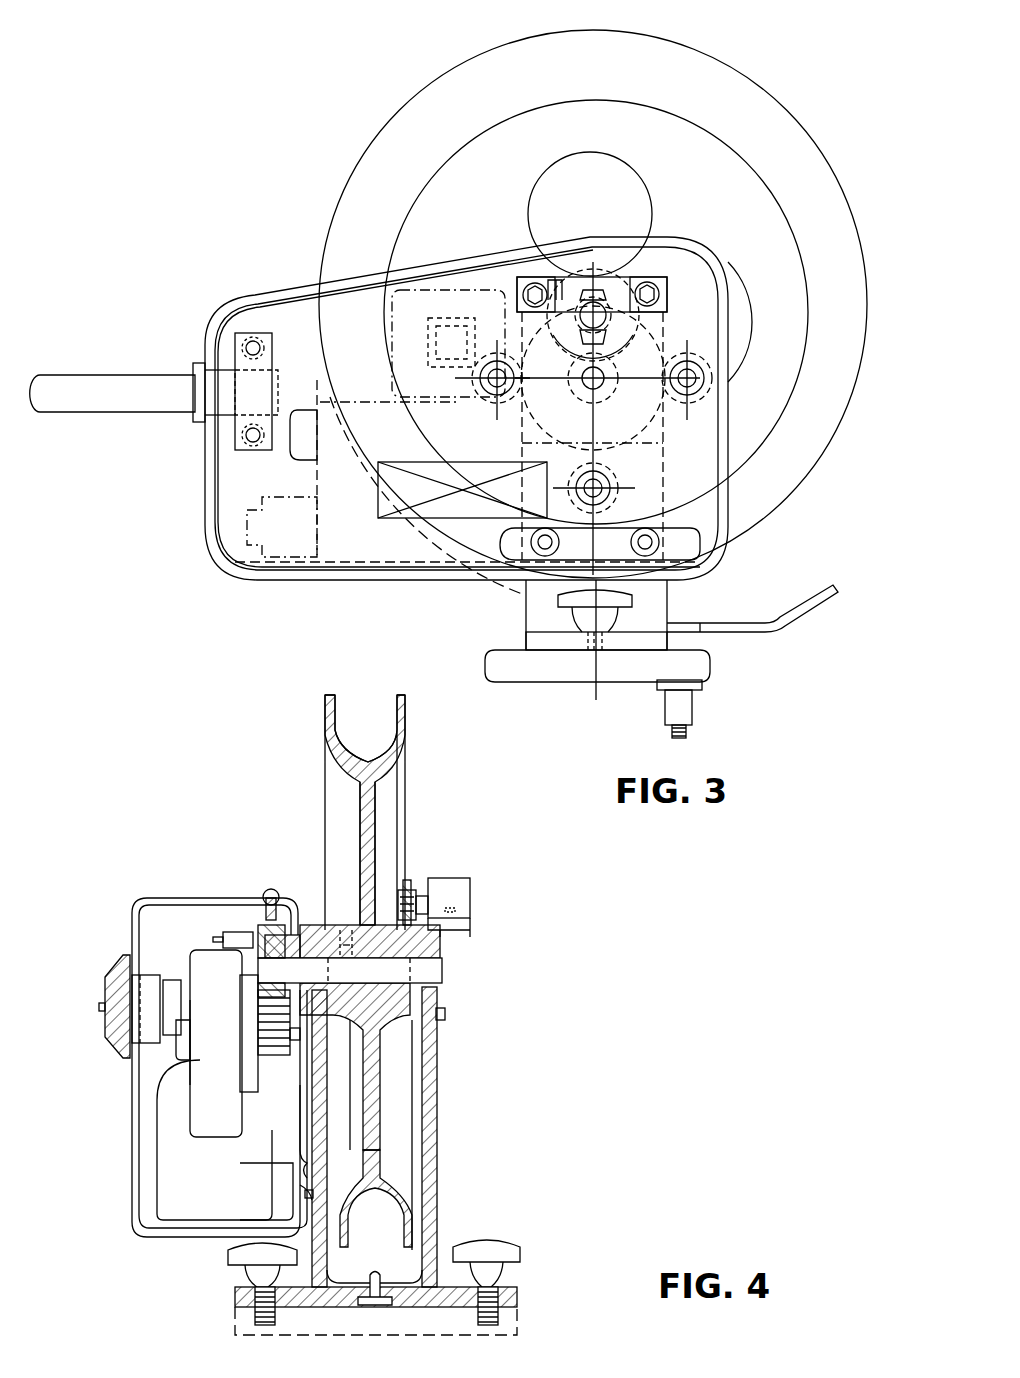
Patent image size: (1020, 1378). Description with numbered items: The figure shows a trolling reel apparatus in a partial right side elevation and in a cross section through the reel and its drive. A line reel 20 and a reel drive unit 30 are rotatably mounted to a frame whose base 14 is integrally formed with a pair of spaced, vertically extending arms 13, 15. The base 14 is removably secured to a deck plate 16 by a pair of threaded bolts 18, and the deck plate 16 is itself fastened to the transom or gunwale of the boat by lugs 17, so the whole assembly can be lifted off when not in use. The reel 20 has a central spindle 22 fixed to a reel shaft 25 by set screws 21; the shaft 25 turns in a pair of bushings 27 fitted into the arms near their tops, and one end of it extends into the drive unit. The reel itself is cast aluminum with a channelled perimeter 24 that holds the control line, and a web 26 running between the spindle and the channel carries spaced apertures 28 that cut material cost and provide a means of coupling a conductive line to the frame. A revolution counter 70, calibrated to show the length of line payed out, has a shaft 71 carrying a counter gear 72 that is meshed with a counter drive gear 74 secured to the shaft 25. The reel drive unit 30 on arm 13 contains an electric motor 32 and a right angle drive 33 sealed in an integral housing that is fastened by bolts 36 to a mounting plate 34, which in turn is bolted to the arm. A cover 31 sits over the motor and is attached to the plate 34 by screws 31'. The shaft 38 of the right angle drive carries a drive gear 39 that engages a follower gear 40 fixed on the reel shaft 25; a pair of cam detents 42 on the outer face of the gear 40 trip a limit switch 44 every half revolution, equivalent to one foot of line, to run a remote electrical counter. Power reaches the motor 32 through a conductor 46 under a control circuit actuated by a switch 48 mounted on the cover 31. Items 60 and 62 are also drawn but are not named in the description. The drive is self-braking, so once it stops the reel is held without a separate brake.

In FIG. 3, the arm 13 is at (672, 600).
In FIG. 4, the arm 13 is at (312, 1238).
In FIG. 3, the base 14 is at (526, 640).
In FIG. 4, the base 14 is at (517, 1300).
In FIG. 4, the arm 15 is at (438, 1135).
In FIG. 3, the deck plate 16 is at (485, 668).
In FIG. 4, the deck plate 16 is at (520, 1322).
In FIG. 3, the lug 17 is at (695, 712).
In FIG. 3, the threaded bolt 18 is at (636, 606).
In FIG. 4, the threaded bolt 18 is at (246, 1270).
In FIG. 3, the line reel 20 is at (790, 110).
In FIG. 4, the set screw 21 is at (347, 930).
In FIG. 4, the central spindle 22 is at (380, 920).
In FIG. 4, the channelled perimeter 24 is at (338, 727).
In FIG. 4, the reel shaft 25 is at (445, 963).
In FIG. 3, the web 26 is at (484, 207).
In FIG. 4, the web 26 is at (372, 845).
In FIG. 4, the bushing 27 is at (305, 935).
In FIG. 3, the aperture 28 is at (618, 192).
In FIG. 4, the aperture 28 is at (378, 1100).
In FIG. 3, the reel drive unit 30 is at (285, 294).
In FIG. 4, the reel drive unit 30 is at (170, 893).
In FIG. 4, the cover 31 is at (173, 858).
In FIG. 4, the screw 31' is at (276, 889).
In FIG. 3, the electric motor 32 is at (414, 447).
In FIG. 4, the electric motor 32 is at (170, 1120).
In FIG. 3, the right angle drive 33 is at (572, 427).
In FIG. 4, the right angle drive 33 is at (200, 1040).
In FIG. 4, the mounting plate 34 is at (290, 910).
In FIG. 4, the bolt 36 is at (305, 1165).
In FIG. 4, the shaft 38 is at (292, 1042).
In FIG. 3, the drive gear 39 is at (604, 396).
In FIG. 4, the drive gear 39 is at (278, 1057).
In FIG. 3, the follower gear 40 is at (547, 344).
In FIG. 4, the follower gear 40 is at (262, 950).
In FIG. 3, the cam detent 42 is at (636, 313).
In FIG. 3, the limit switch 44 is at (550, 280).
In FIG. 4, the limit switch 44 is at (245, 930).
In FIG. 3, the conductor 46 is at (128, 372).
In FIG. 3, the switch 48 is at (470, 368).
In FIG. 4, the switch 48 is at (112, 977).
In FIG. 3, the lever 60 is at (797, 624).
In FIG. 3, the lever arm 62 is at (735, 633).
In FIG. 4, the revolution counter 70 is at (470, 889).
In FIG. 4, the counter shaft 71 is at (426, 900).
In FIG. 4, the counter gear 72 is at (410, 890).
In FIG. 4, the counter drive gear 74 is at (442, 1015).